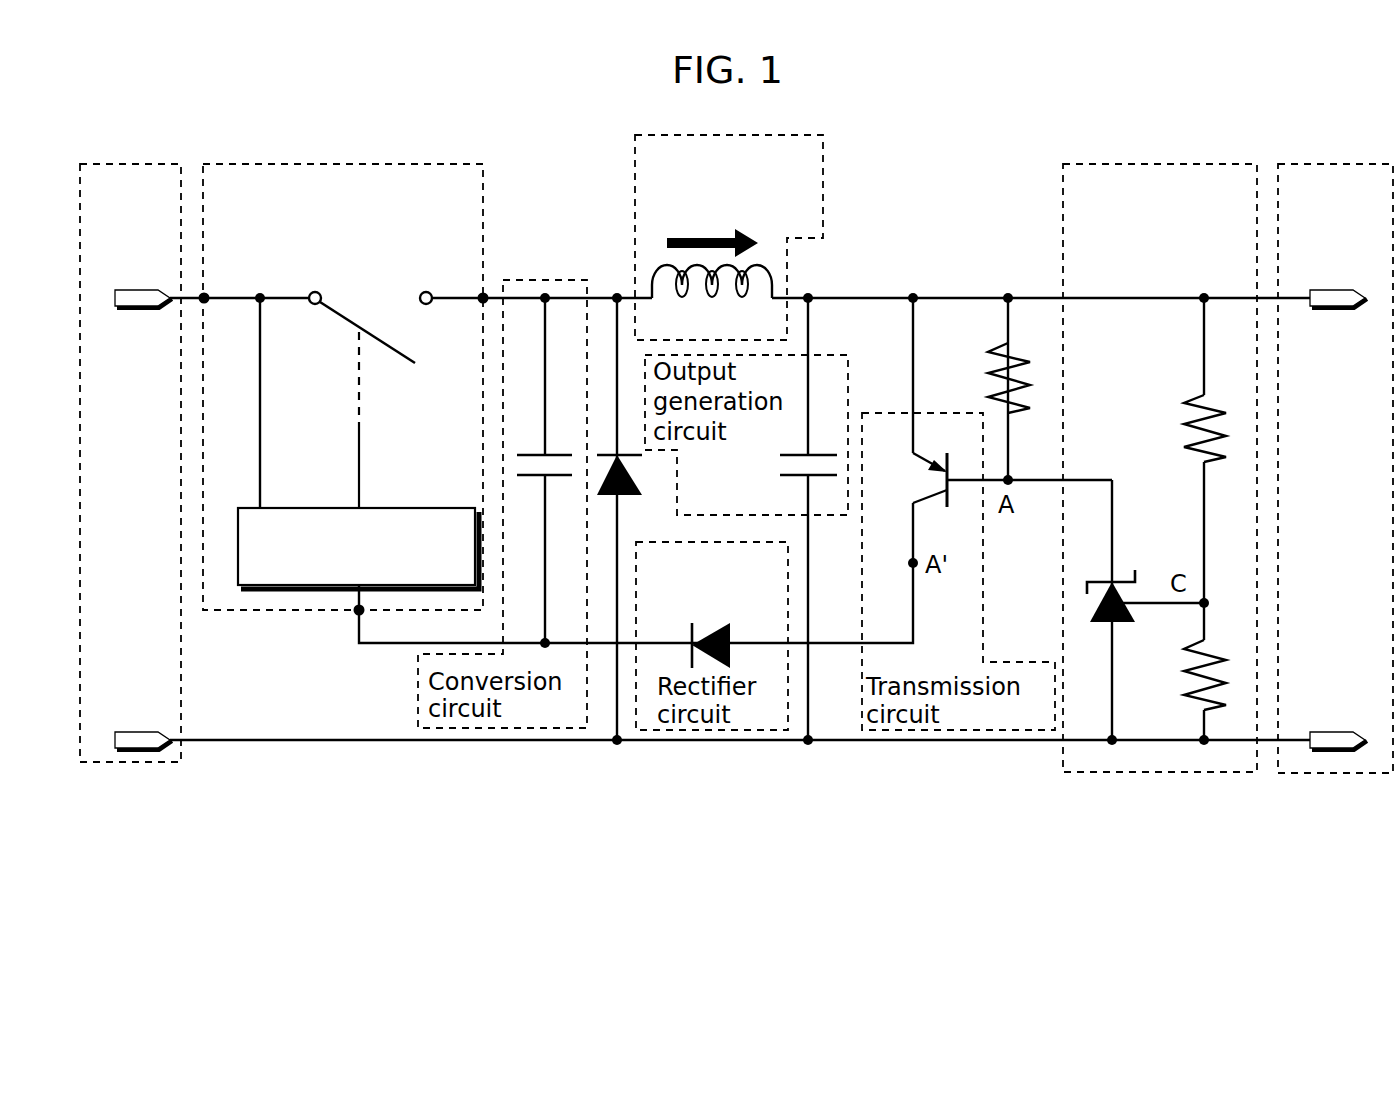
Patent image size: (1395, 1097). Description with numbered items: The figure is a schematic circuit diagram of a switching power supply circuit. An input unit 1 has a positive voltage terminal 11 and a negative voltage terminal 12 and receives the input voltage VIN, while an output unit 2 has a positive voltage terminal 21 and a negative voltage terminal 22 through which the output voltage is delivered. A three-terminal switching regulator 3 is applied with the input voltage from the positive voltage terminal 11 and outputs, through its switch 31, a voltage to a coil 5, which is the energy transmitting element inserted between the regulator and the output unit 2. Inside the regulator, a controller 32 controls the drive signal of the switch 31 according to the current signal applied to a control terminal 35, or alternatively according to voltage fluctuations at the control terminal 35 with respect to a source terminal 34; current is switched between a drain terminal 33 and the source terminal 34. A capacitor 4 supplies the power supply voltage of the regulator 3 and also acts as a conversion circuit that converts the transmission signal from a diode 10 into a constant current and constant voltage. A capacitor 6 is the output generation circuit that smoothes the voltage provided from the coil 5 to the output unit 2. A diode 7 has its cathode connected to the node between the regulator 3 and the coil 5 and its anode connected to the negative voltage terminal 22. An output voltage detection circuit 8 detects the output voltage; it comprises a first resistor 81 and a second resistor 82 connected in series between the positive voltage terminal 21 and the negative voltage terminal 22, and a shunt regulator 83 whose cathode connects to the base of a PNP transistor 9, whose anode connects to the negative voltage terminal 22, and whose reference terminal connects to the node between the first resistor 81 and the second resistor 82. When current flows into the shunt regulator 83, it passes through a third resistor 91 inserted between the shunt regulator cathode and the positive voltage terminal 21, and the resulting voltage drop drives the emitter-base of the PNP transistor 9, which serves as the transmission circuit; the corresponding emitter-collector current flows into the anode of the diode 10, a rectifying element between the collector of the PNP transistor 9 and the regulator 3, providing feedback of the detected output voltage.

The input unit 1 is at (122, 162).
The output unit 2 is at (1318, 164).
The three-terminal switching regulator 3 is at (463, 162).
The capacitor 4 is at (544, 470).
The coil 5 is at (729, 237).
The capacitor 6 is at (792, 469).
The diode 7 is at (629, 475).
The output voltage detection circuit 8 is at (1127, 774).
The PNP transistor 9 is at (943, 402).
The diode 10 is at (710, 629).
The positive voltage terminal 11 is at (141, 315).
The negative voltage terminal 12 is at (138, 709).
The positive voltage terminal 21 is at (1328, 312).
The negative voltage terminal 22 is at (1328, 731).
The switch 31 is at (370, 397).
The controller 32 is at (358, 533).
The drain terminal 33 is at (200, 295).
The source terminal 34 is at (483, 296).
The control terminal 35 is at (356, 612).
The first resistor 81 is at (1180, 450).
The second resistor 82 is at (1183, 671).
The shunt regulator 83 is at (1135, 610).
The third resistor 91 is at (987, 378).